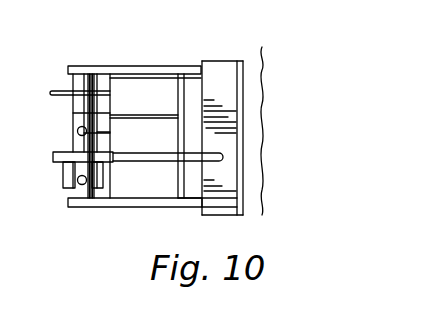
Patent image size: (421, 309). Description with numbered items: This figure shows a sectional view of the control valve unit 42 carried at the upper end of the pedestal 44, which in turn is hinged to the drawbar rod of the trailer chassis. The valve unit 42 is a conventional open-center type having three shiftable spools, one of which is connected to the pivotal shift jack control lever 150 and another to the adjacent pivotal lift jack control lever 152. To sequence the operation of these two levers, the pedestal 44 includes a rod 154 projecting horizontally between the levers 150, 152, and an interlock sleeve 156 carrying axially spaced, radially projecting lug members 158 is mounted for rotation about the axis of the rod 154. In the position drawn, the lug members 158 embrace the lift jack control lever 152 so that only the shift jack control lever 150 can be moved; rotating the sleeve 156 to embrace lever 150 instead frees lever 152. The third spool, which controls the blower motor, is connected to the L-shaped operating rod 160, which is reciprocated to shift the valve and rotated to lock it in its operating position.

The control valve unit 42 is at (97, 66).
The pedestal 44 is at (262, 70).
The shift jack control lever 150 is at (78, 131).
The lift jack control lever 152 is at (80, 185).
The rod 154 is at (151, 154).
The interlock sleeve 156 is at (111, 150).
The lug members 158 is at (63, 177).
The L-shaped operating rod 160 is at (50, 91).